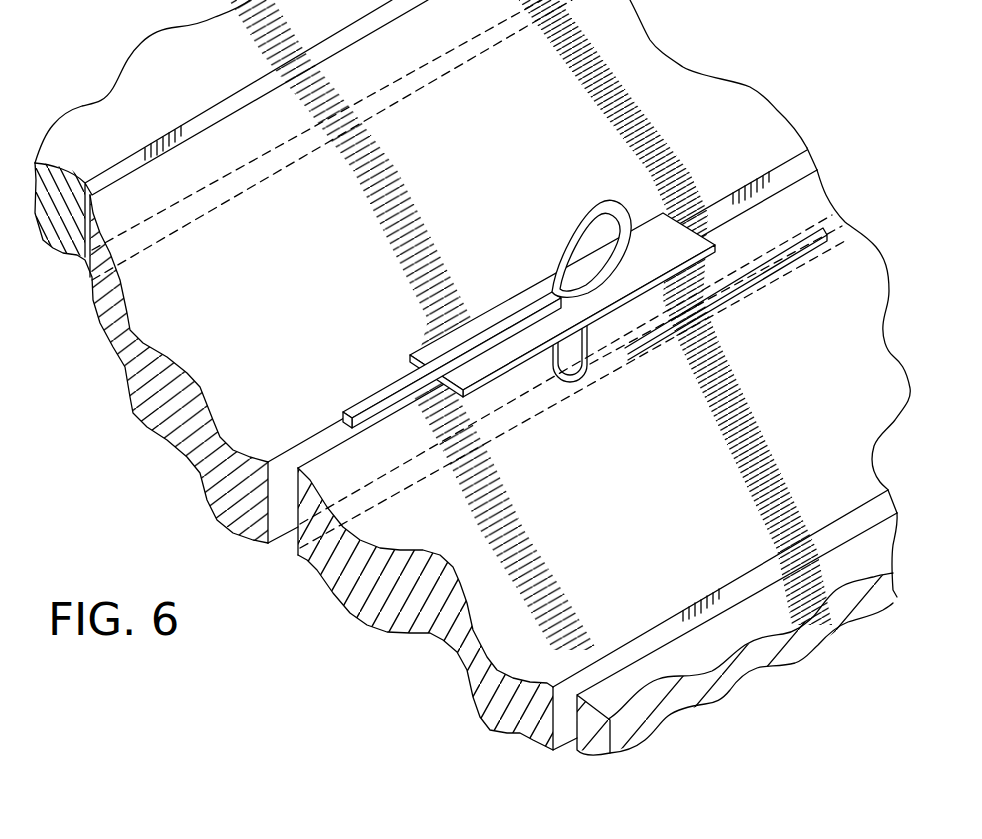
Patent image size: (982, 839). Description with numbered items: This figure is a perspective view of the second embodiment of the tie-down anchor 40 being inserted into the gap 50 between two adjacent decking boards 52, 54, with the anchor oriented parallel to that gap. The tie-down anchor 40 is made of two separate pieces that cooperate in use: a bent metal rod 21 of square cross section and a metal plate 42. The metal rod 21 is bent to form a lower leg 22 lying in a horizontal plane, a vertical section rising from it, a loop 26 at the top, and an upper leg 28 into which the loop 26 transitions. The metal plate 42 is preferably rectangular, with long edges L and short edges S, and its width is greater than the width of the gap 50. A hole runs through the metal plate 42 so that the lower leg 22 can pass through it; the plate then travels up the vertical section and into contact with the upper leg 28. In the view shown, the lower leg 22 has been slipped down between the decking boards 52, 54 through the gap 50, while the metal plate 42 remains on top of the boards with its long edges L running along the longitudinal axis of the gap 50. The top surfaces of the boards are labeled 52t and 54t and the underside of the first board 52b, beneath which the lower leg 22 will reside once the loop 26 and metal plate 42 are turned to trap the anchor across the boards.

The metal rod 21 is at (465, 268).
The lower leg 22 is at (752, 276).
The loop 26 is at (590, 211).
The upper leg 28 is at (343, 406).
The tie-down anchor 40 is at (511, 292).
The metal plate 42 is at (477, 370).
The gap 50 is at (806, 165).
The decking board 52 is at (173, 327).
The top surface of first plate 52t is at (262, 268).
The bottom surface of first plate 52b is at (142, 418).
The decking board 54 is at (503, 613).
The top surface of second plate 54t is at (672, 530).
The short edges S is at (452, 395).
The long edges L is at (607, 310).